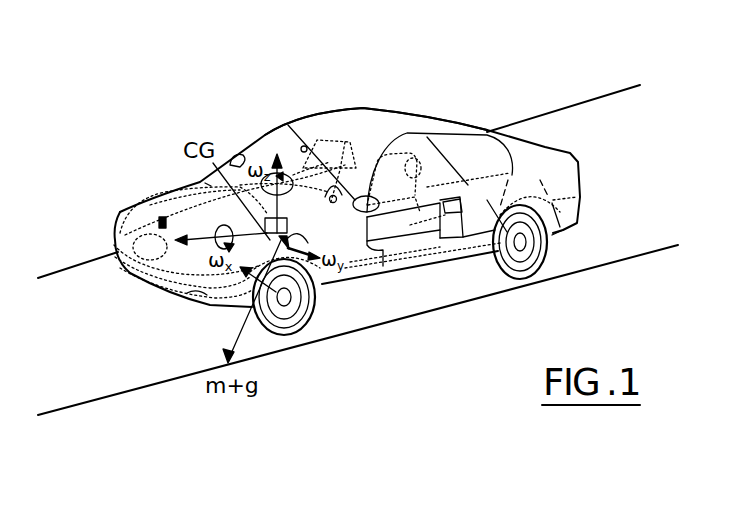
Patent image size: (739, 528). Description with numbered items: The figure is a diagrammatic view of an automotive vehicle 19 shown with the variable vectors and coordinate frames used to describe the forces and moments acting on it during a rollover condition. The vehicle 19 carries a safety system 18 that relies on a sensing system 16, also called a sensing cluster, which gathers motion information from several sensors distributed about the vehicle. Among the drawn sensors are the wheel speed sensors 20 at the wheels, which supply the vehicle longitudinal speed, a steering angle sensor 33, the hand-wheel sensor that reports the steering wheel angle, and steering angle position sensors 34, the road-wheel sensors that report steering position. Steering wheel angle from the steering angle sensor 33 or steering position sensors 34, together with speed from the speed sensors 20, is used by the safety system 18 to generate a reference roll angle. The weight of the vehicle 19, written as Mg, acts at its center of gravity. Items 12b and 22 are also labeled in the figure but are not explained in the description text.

The front wheel 12b is at (292, 332).
The sensing system 16 is at (305, 146).
The safety system 18 is at (422, 210).
The automotive vehicle 19 is at (372, 106).
The wheel speed sensors 20 is at (512, 246).
The sensor 22 is at (207, 184).
The steering angle sensor 33 is at (338, 183).
The steering angle position sensors 34 is at (161, 225).